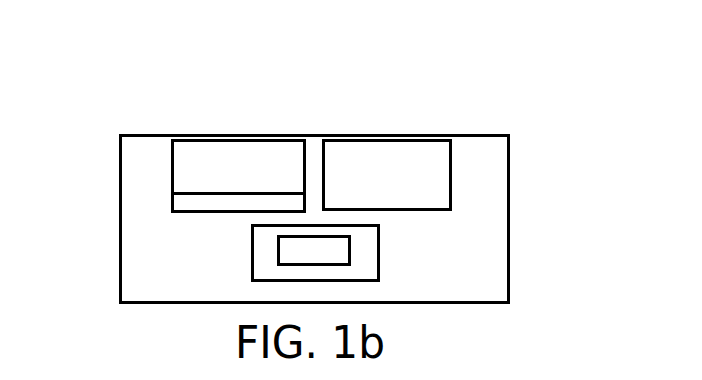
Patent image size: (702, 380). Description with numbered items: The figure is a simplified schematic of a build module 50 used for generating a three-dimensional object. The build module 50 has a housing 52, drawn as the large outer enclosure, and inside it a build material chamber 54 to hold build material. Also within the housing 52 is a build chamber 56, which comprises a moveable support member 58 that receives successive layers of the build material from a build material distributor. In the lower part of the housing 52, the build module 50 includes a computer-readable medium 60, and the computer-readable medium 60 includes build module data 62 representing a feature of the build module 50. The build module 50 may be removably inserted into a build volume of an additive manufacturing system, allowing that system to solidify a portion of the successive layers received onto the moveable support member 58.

The build module 50 is at (418, 113).
The housing 52 is at (143, 135).
The build material chamber 54 is at (452, 182).
The build chamber 56 is at (172, 165).
The moveable support member 58 is at (172, 205).
The computer-readable medium 60 is at (380, 253).
The build module data 62 is at (278, 252).